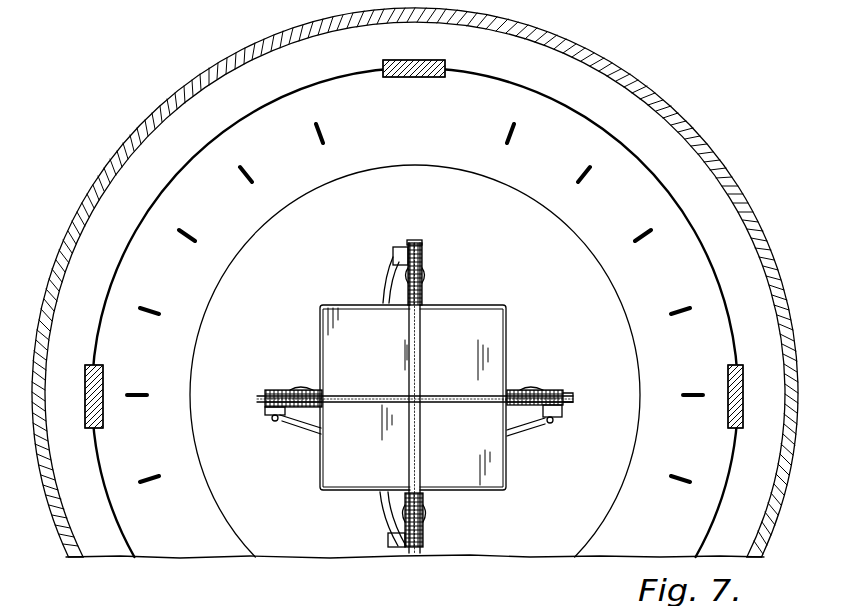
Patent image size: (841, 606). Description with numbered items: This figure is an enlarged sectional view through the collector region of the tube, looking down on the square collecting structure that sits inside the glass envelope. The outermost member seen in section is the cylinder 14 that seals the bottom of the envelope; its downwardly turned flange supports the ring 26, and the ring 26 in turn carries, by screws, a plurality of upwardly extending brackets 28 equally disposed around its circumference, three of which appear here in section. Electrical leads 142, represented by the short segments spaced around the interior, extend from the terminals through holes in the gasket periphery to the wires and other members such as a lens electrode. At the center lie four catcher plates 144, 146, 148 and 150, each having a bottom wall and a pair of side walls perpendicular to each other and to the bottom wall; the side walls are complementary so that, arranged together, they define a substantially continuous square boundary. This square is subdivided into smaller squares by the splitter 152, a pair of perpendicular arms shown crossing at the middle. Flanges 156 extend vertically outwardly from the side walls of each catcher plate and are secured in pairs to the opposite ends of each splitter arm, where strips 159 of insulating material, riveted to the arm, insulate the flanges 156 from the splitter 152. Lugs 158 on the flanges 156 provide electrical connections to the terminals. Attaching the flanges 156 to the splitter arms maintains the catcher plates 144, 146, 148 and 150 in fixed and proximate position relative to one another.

The cylinder 14 is at (592, 505).
The ring 26 is at (645, 164).
The brackets 28 is at (439, 60).
The electrical leads 142 is at (640, 234).
The catcher plate 144 is at (463, 305).
The catcher plate 146 is at (356, 290).
The catcher plate 148 is at (355, 490).
The catcher plate 150 is at (470, 490).
The splitter 152 is at (477, 403).
The flanges 156 is at (292, 376).
The lugs 158 is at (404, 247).
The strips 159 is at (422, 244).